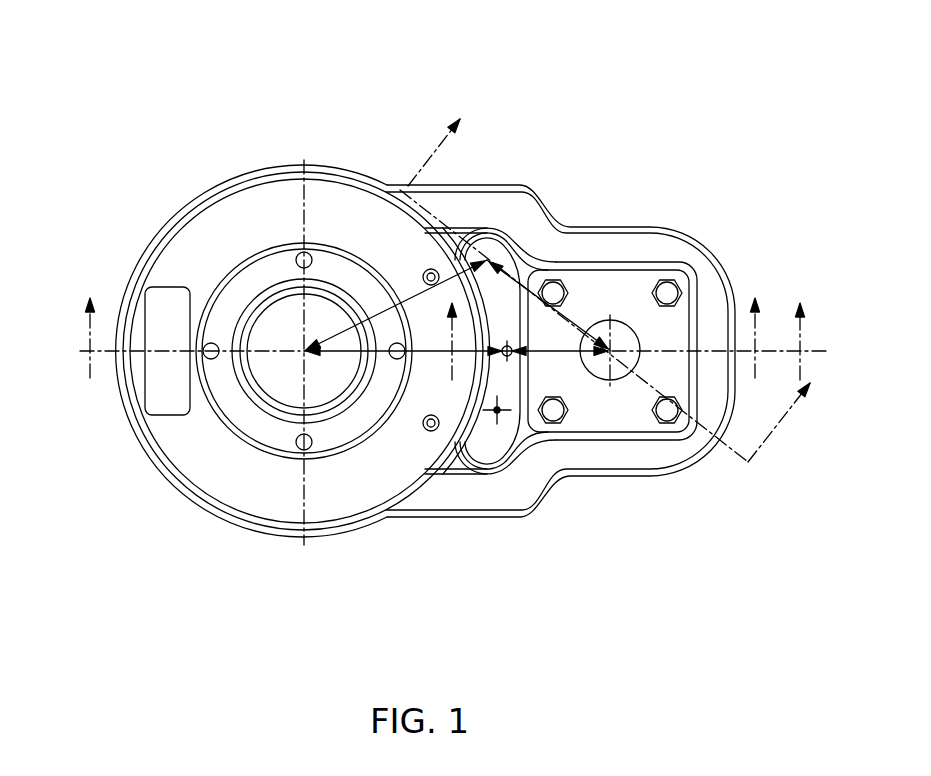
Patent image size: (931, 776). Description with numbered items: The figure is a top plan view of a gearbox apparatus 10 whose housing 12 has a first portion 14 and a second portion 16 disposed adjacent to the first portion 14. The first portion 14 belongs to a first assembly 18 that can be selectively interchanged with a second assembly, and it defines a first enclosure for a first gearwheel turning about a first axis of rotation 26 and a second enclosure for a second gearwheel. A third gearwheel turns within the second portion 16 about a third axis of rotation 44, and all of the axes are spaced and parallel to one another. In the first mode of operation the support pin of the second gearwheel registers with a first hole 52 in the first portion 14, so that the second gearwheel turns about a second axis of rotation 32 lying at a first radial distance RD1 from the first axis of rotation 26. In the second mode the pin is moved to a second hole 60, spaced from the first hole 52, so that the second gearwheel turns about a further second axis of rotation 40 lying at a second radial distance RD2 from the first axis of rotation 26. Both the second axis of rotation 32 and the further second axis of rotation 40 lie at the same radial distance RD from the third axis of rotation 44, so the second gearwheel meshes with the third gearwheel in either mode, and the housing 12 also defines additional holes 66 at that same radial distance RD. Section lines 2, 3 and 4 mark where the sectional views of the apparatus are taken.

The gearbox apparatus 10 is at (392, 318).
The housing 12 is at (222, 538).
The first portion 14 is at (620, 485).
The second portion 16 is at (128, 457).
The first assembly 18 is at (676, 488).
The first axis of rotation 26 is at (700, 303).
The second axis of rotation 32 is at (508, 346).
The further second axis of rotation 40 is at (489, 258).
The third axis of rotation 44 is at (304, 351).
The first hole 52 is at (600, 322).
The second hole 60 is at (520, 250).
The additional hole 66 is at (495, 412).
The radial distance RD is at (372, 565).
The first radial distance RD1 is at (560, 356).
The second radial distance RD2 is at (606, 318).
The line 2- 2 is at (420, 334).
The line 3- 3 is at (612, 282).
The section line 4- 4 is at (625, 339).